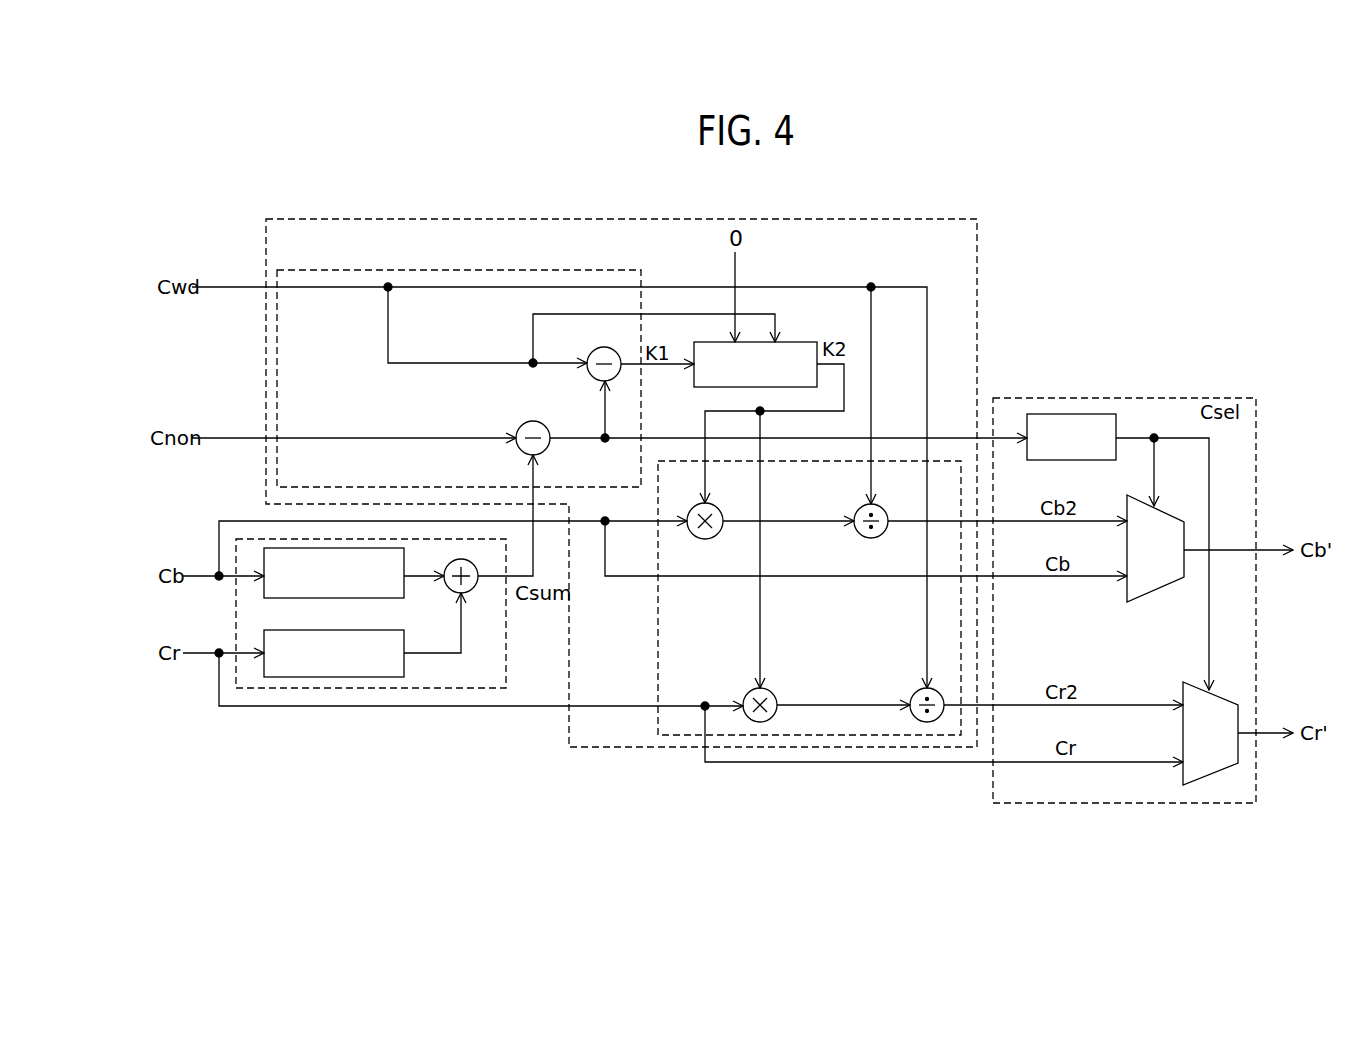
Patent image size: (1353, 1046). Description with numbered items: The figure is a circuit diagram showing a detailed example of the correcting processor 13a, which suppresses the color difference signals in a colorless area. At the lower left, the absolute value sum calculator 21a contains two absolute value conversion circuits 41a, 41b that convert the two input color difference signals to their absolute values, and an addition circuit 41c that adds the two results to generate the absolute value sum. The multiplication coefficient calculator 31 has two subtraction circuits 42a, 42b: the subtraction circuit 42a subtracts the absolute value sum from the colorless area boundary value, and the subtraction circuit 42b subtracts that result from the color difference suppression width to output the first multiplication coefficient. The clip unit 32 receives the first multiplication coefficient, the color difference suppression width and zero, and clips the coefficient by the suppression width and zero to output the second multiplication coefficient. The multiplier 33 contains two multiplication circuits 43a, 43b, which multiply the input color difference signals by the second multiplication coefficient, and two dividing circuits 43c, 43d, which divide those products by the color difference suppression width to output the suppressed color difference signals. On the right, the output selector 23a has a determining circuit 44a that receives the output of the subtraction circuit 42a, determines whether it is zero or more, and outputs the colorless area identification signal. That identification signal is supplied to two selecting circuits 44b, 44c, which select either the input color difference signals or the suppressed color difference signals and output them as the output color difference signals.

The correcting processor 13a is at (1085, 208).
The multiplication coefficient calculator 31 is at (622, 267).
The clip unit 32 is at (800, 340).
The multiplier 33 is at (657, 653).
The absolute value sum calculator 21a is at (464, 692).
The output selector 23a is at (1207, 396).
The absolute value conversion circuit 41a is at (320, 599).
The absolute value conversion circuit 41b is at (336, 623).
The addition circuit 41c is at (462, 557).
The subtraction circuit 42a is at (530, 421).
The subtraction circuit 42b is at (605, 347).
The multiplication circuit 43a is at (718, 536).
The multiplication circuit 43b is at (772, 690).
The dividing circuit 43c is at (860, 504).
The dividing circuit 43d is at (910, 690).
The determining circuit 44a is at (1068, 461).
The selecting circuit 44b is at (1160, 600).
The selecting circuit 44c is at (1183, 680).